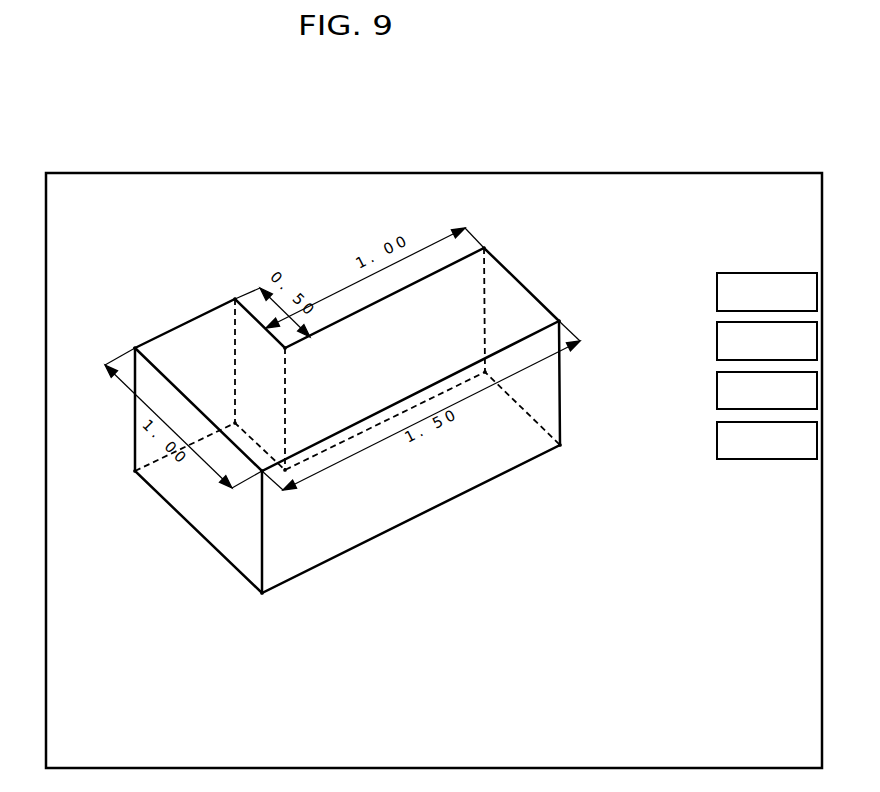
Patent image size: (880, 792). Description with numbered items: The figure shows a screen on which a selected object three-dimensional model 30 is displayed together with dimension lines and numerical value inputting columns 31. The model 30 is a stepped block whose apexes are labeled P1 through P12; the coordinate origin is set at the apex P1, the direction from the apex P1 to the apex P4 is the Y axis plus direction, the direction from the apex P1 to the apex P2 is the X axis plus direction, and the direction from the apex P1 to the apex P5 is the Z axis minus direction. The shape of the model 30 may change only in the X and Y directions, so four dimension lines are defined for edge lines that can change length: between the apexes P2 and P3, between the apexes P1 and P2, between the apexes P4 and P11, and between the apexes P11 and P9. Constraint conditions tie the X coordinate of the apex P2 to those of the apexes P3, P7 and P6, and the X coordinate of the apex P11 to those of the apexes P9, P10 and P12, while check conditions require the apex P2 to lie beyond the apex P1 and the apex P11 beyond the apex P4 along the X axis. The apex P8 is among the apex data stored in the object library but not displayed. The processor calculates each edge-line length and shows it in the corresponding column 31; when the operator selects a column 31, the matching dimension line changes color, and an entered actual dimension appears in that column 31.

The object 3-D model 30 is at (183, 324).
The numerical value inputting columns 31 is at (755, 258).
The apex P1 is at (135, 348).
The apex P2 is at (262, 471).
The apex P3 is at (559, 321).
The apex P4 is at (235, 299).
The apex P5 is at (135, 471).
The apex P6 is at (262, 595).
The apex P7 is at (560, 447).
The apex P8 is at (235, 423).
The apex P9 is at (484, 248).
The apex P10 is at (485, 372).
The apex P11 is at (285, 348).
The apex P12 is at (285, 470).